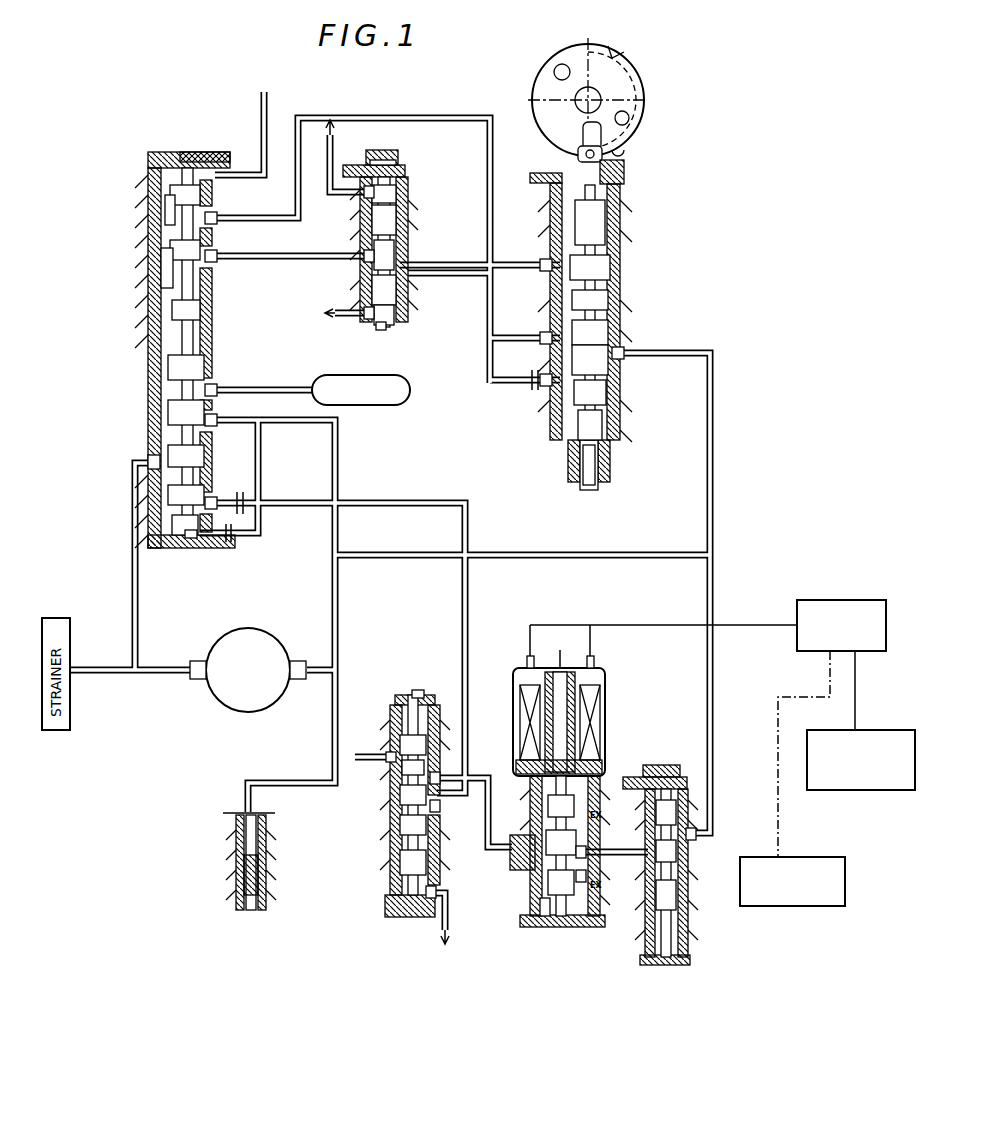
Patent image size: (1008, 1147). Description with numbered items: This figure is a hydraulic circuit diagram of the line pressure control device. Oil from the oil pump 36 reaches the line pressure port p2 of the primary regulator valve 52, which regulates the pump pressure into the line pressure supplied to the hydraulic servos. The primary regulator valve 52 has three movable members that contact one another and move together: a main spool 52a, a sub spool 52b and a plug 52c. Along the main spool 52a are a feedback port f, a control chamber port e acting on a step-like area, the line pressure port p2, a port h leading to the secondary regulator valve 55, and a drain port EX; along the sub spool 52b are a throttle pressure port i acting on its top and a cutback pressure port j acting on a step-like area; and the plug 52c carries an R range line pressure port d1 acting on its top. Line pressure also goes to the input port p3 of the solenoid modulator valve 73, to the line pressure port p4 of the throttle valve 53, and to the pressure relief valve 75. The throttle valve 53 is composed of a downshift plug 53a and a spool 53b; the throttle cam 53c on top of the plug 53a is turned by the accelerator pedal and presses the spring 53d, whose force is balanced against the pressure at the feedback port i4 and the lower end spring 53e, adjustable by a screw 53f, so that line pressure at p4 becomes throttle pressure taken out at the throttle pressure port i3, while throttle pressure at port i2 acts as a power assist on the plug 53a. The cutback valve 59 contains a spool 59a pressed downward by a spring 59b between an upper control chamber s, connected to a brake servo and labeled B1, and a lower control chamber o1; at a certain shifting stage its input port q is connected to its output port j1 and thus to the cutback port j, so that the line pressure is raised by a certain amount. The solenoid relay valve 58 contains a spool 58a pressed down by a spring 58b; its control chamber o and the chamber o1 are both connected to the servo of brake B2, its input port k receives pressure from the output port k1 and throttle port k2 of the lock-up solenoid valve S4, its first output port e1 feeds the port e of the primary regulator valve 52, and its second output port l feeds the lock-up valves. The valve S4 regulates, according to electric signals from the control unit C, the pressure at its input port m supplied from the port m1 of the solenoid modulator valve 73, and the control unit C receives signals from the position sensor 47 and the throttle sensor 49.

The primary regulator valve 52 is at (141, 146).
The main spool 52a is at (148, 425).
The sub spool 52b is at (148, 270).
The plug 52c is at (148, 198).
The R range line pressure port d1 is at (205, 155).
The throttle pressure port i is at (212, 216).
The cutback pressure port j is at (212, 262).
The port h is at (213, 382).
The line pressure port p2 is at (213, 428).
The control chamber port e is at (213, 503).
The feedback port f is at (186, 540).
The drain port EX is at (148, 462).
The cutback valve 59 is at (392, 170).
The spool 59a is at (405, 228).
The spring 59b is at (405, 193).
The upper control chamber s is at (368, 168).
The input port q is at (400, 290).
The output port j1 is at (364, 252).
The lower control chamber o1 is at (372, 330).
The brake port B1 is at (338, 158).
The brake B2 is at (381, 636).
The secondary regulator valve 55 is at (380, 367).
The throttle valve 53 is at (662, 150).
The downshift plug 53a is at (612, 205).
The spool 53b is at (612, 322).
The throttle cam 53c is at (640, 80).
The spring 53d is at (620, 270).
The lower end spring 53e is at (610, 425).
The screw 53f is at (605, 472).
The port i2 is at (552, 262).
The throttle pressure port i3 is at (552, 336).
The feedback port i4 is at (562, 400).
The line pressure port p4 is at (626, 350).
The oil pump 36 is at (250, 628).
The solenoid relay valve 58 is at (396, 682).
The spool 58a is at (400, 795).
The spring 58b is at (420, 692).
The second output port l is at (390, 758).
The input port k is at (433, 776).
The first output port e1 is at (438, 805).
The control chamber o is at (436, 890).
The lock-up solenoid valve S4 is at (512, 659).
The output port k1 is at (528, 815).
The throttle port k2 is at (540, 905).
The input port m is at (590, 842).
The port m1 is at (600, 870).
The solenoid modulator valve 73 is at (660, 756).
The input port p3 is at (692, 840).
The pressure relief valve 75 is at (238, 802).
The control unit C is at (845, 600).
The position sensor 47 is at (857, 790).
The throttle sensor 49 is at (797, 906).